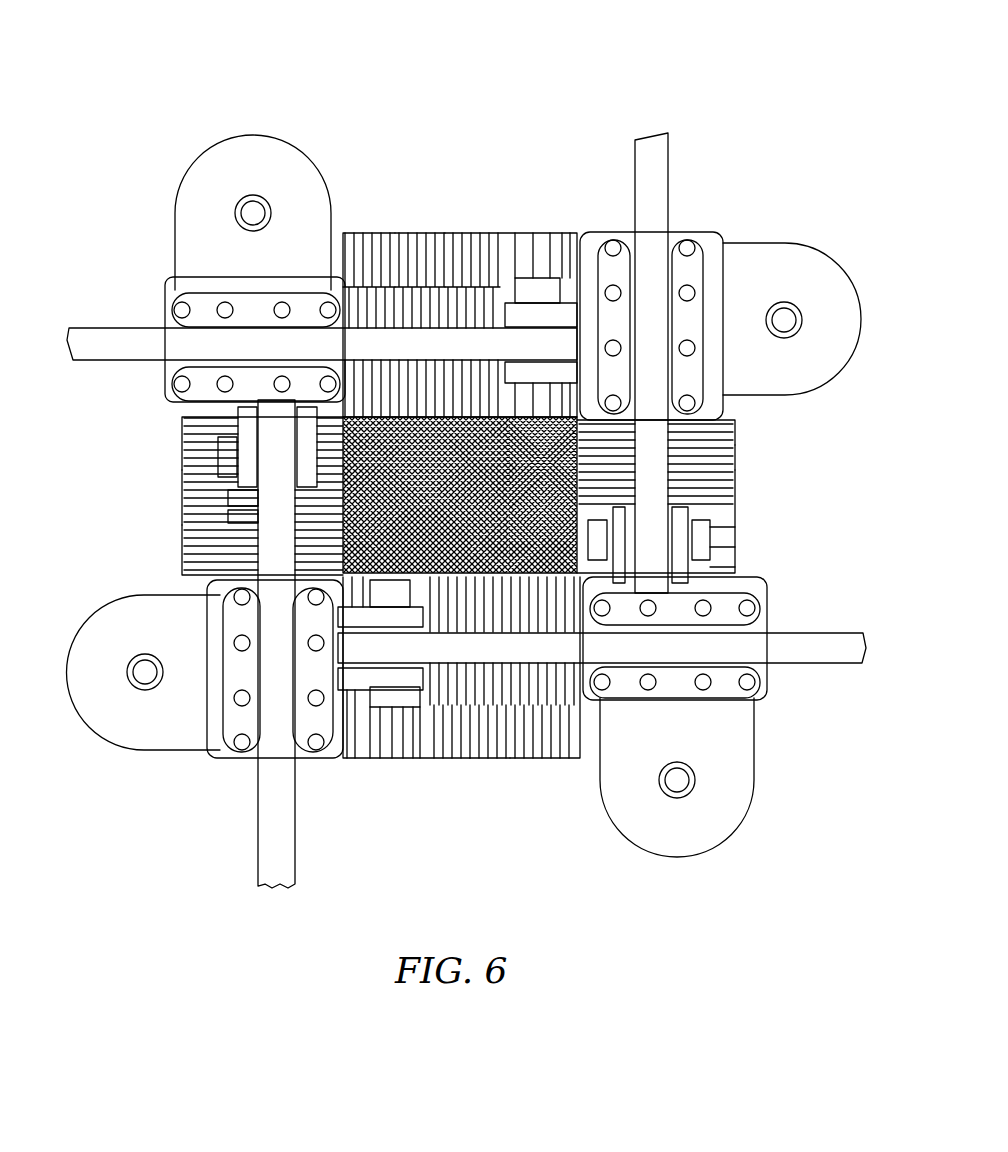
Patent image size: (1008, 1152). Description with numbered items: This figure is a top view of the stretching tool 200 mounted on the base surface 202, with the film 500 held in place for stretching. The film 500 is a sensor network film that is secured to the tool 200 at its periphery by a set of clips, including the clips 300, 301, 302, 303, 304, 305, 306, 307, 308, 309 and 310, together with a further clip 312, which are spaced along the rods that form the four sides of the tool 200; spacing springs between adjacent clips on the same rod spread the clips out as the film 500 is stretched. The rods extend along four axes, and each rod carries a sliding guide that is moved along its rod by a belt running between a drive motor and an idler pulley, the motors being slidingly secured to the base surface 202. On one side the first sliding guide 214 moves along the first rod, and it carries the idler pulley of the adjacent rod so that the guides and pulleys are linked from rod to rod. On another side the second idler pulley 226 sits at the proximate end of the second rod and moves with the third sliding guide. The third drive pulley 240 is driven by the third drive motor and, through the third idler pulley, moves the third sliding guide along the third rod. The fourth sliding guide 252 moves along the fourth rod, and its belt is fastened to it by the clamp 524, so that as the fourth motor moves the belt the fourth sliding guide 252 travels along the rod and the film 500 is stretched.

The stretching tool 200 is at (588, 70).
The base surface 202 is at (473, 904).
The first sliding guide 214 is at (185, 232).
The second idler pulley 226 is at (803, 260).
The third drive pulley 240 is at (710, 817).
The fourth sliding guide 252 is at (147, 735).
The clip 300 is at (193, 562).
The clip 301 is at (193, 537).
The clip 302 is at (193, 520).
The clip 303 is at (370, 233).
The clip 304 is at (405, 233).
The clip 305 is at (457, 233).
The clip 306 is at (735, 433).
The clip 307 is at (735, 458).
The clip 308 is at (735, 478).
The clip 309 is at (523, 757).
The clip 310 is at (493, 757).
The fin layer 312 is at (455, 757).
The film 500 is at (393, 418).
The clamp 524 is at (242, 750).